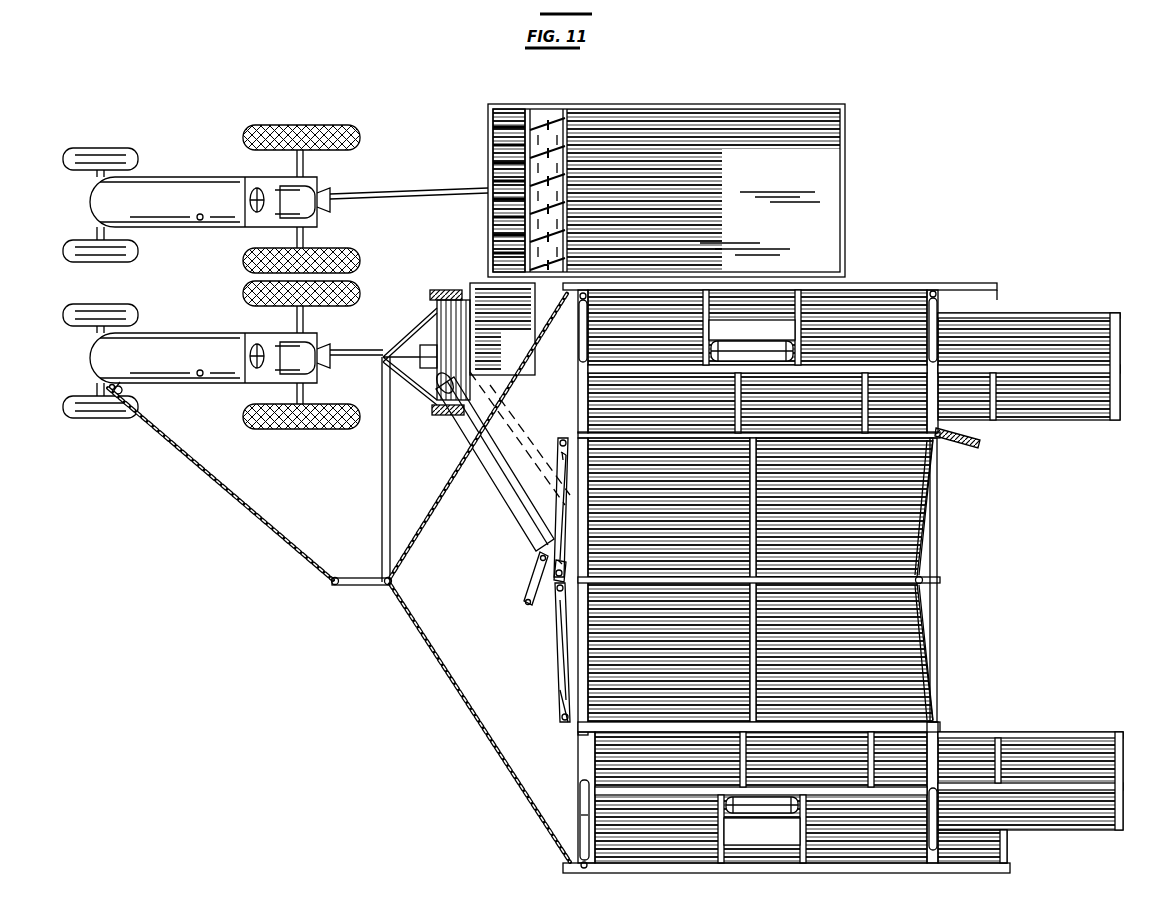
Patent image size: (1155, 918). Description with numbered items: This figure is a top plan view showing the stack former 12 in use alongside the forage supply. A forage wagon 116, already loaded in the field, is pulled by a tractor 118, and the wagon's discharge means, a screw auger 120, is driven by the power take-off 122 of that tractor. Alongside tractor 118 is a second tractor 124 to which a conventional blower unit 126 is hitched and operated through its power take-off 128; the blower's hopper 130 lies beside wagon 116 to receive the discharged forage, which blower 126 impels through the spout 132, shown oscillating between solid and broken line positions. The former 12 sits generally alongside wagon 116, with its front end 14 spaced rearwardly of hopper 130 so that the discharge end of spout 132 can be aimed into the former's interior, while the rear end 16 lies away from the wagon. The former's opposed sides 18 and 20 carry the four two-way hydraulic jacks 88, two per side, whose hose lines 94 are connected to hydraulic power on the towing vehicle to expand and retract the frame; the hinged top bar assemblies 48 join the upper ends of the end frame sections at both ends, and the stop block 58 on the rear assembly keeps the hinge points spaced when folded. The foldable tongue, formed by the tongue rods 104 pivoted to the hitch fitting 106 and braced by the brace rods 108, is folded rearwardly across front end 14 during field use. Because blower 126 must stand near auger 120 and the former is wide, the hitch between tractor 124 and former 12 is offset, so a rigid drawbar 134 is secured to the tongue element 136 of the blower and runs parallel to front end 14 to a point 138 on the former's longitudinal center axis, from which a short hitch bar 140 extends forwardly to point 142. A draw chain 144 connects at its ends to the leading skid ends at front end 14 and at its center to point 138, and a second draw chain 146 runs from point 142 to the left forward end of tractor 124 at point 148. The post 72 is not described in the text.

The stack former 12 is at (942, 705).
The front end 14 is at (510, 654).
The rear end 16 is at (990, 575).
The side 18 is at (572, 392).
The side 20 is at (578, 768).
The top bar assembly 48 is at (937, 525).
The stop block 58 is at (965, 445).
The post 72 is at (942, 600).
The hydraulic jack 88 is at (580, 332).
The hose line 94 is at (555, 693).
The tongue rod 104 is at (556, 450).
The hitch fitting 106 is at (526, 598).
The brace rod 108 is at (556, 495).
The forage wagon 116 is at (680, 110).
The tractor 118 is at (200, 177).
The screw auger 120 is at (565, 122).
The power take-off 122 is at (385, 190).
The second tractor 124 is at (200, 333).
The blower unit 126 is at (455, 370).
The power take-off 128 is at (338, 355).
The hopper 130 is at (470, 285).
The spout 132 is at (528, 422).
The drawbar 134 is at (388, 478).
The tongue element 136 is at (427, 310).
The point 138 is at (387, 587).
The hitch bar 140 is at (352, 578).
The point 142 is at (333, 587).
The draw chain 144 is at (420, 542).
The second draw chain 146 is at (237, 500).
The point 148 is at (108, 384).